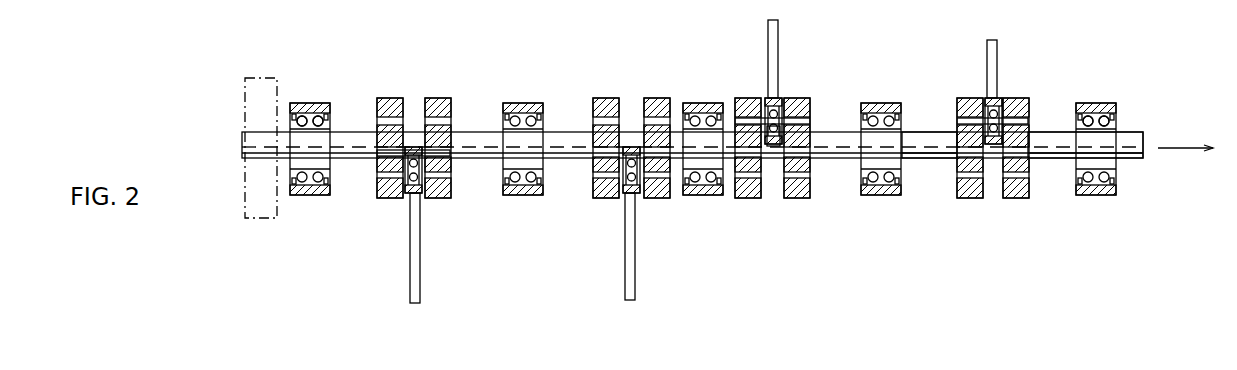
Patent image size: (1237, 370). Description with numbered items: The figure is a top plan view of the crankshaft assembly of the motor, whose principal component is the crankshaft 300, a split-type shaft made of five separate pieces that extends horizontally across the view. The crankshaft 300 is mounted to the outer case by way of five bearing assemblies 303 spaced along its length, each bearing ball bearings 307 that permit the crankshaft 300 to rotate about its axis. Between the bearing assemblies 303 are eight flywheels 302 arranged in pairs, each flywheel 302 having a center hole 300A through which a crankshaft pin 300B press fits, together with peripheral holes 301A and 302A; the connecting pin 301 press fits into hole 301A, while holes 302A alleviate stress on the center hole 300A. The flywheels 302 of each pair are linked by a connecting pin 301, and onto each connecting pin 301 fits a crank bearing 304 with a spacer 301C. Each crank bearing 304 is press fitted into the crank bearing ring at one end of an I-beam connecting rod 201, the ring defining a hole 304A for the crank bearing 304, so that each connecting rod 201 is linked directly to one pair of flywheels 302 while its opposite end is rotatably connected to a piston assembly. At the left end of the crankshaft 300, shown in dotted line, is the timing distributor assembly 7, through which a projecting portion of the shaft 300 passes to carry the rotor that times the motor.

The timing distributor assembly 7 is at (266, 76).
The I-beam connecting rod 201 is at (420, 292).
The crankshaft 300 is at (474, 166).
The shaft portion 300A is at (1031, 146).
The crankshaft pin 300B is at (954, 145).
The connecting pin 301 is at (378, 170).
The peripheral hole 301A is at (1017, 120).
The spacer 301C is at (762, 100).
The flywheel 302 is at (387, 97).
The peripheral hole 302A is at (1018, 199).
The bearing assembly 303 is at (306, 102).
The crank bearing 304 is at (777, 97).
The hole 304A is at (812, 132).
The ball bearing 307 is at (327, 123).